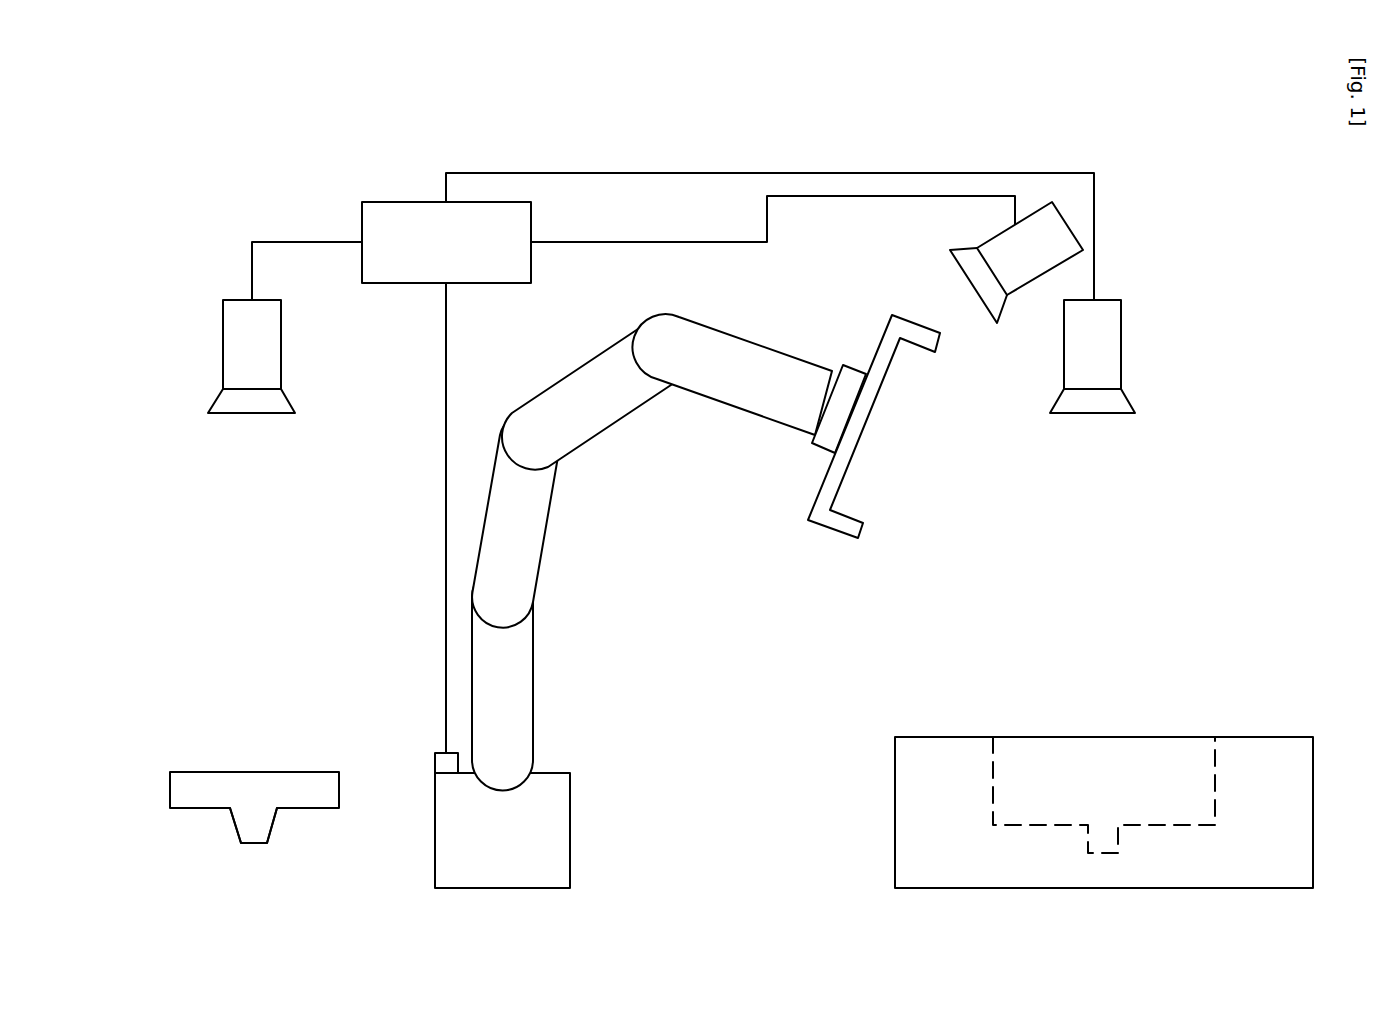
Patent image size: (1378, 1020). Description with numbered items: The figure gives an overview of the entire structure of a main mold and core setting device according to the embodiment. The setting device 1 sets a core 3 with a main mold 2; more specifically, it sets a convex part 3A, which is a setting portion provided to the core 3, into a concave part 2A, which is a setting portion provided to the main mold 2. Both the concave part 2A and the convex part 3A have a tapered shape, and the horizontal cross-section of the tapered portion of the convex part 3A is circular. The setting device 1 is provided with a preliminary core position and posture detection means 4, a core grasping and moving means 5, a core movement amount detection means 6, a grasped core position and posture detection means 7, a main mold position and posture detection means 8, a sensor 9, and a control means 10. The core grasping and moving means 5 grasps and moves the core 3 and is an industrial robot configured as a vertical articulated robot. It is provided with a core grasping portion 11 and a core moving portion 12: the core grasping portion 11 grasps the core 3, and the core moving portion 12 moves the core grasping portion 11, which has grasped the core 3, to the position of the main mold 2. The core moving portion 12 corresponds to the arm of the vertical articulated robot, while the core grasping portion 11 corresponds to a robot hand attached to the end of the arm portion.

The setting device 1 is at (1189, 292).
The main mold 2 is at (1280, 737).
The concave part 2A is at (1103, 853).
The core 3 is at (203, 772).
The convex part 3A is at (268, 833).
The preliminary core position and posture detection means 4 is at (223, 352).
The core grasping and moving means 5 is at (693, 579).
The core movement amount detection means 6 is at (435, 766).
The grasped core position and posture detection means 7 is at (1023, 293).
The main mold position and posture detection means 8 is at (1121, 367).
The sensor 9 is at (851, 369).
The control means 10 is at (362, 215).
The core grasping portion 11 is at (843, 538).
The core moving portion 12 is at (732, 335).